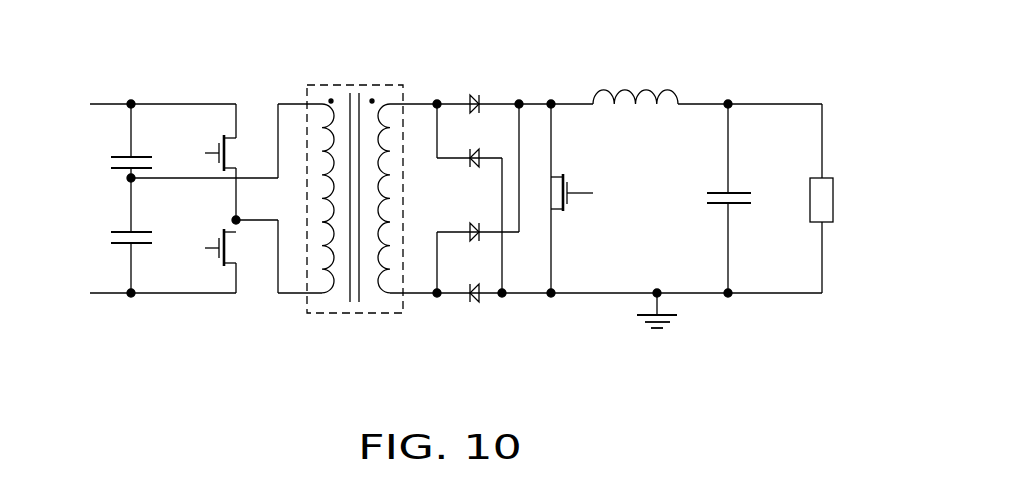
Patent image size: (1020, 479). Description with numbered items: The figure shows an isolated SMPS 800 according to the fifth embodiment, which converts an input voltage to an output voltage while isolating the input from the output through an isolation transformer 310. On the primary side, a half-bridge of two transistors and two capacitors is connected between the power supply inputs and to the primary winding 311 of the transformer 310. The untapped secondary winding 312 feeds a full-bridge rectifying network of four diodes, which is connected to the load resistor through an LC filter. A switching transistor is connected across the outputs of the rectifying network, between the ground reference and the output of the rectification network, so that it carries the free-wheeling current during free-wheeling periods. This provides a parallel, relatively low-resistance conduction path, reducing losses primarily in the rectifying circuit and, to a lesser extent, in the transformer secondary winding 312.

The isolated SMPS 800 is at (591, 52).
The isolation transformer 310 is at (347, 83).
The primary winding 311 is at (323, 308).
The transformer secondary winding 312 is at (382, 308).